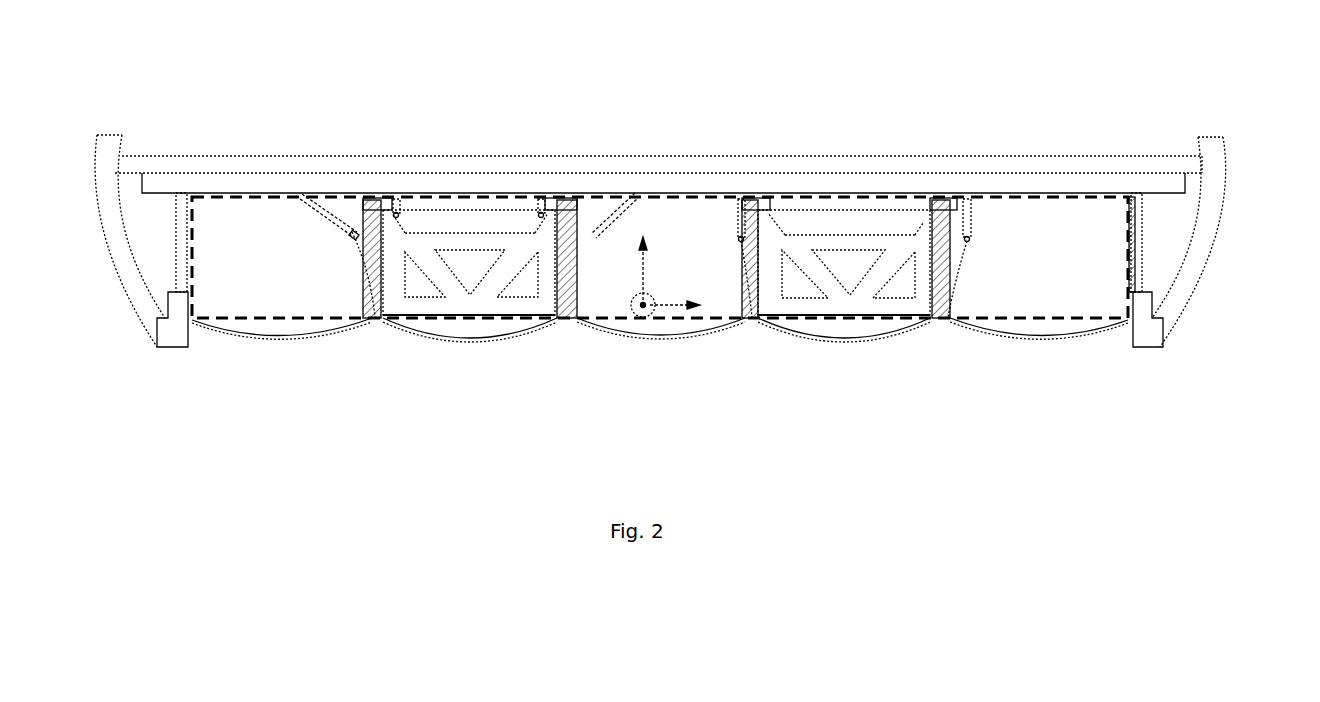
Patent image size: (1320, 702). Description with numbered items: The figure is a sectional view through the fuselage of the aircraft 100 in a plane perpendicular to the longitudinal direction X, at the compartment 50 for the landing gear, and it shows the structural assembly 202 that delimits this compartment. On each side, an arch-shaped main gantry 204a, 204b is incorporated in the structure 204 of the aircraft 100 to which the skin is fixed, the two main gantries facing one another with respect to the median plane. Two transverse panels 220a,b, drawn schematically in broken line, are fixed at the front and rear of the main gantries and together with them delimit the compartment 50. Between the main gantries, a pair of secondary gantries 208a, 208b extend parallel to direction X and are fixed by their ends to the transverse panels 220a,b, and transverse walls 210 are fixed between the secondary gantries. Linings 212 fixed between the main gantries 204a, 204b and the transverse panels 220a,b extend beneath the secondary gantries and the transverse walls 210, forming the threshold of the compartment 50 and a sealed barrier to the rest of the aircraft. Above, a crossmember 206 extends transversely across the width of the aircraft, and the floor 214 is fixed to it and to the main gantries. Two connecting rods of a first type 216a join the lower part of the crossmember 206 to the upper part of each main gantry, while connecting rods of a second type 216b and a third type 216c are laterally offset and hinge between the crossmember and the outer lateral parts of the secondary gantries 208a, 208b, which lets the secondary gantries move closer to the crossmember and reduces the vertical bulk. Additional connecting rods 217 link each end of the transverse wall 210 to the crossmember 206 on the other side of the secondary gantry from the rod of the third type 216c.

The aircraft 100 is at (232, 138).
The structural assembly 202 is at (1142, 137).
The structure 204 is at (1256, 179).
The main gantry 204a is at (185, 350).
The main gantry 204b is at (1200, 272).
The crossmember 206 is at (662, 178).
The floor 214 is at (990, 156).
The additional connecting rod 217 is at (420, 196).
The transverse wall 210 is at (495, 243).
The secondary gantry 208a is at (362, 276).
The secondary gantry 208b is at (578, 322).
The lining 212 is at (428, 337).
The connecting rod of a first type 216a is at (1128, 262).
The connecting rod of a second type 216b is at (975, 218).
The connecting rod of a third type 216c is at (325, 212).
The transverse panels 220a,b is at (843, 320).
The compartment 50 is at (678, 395).